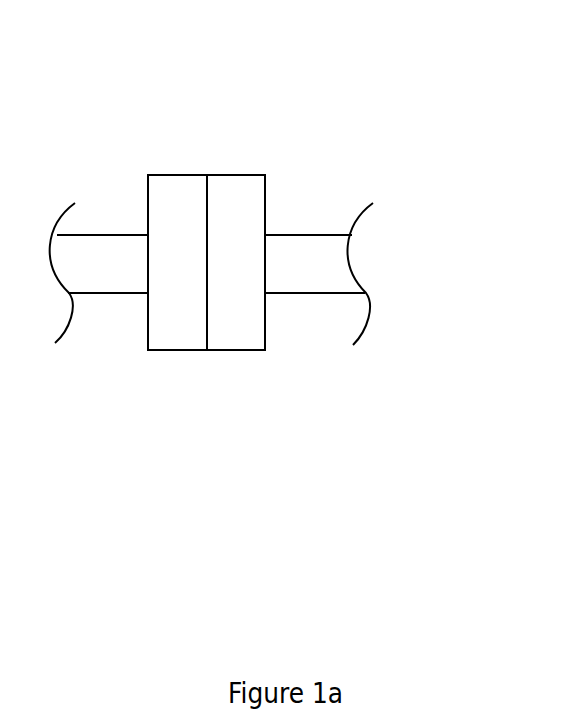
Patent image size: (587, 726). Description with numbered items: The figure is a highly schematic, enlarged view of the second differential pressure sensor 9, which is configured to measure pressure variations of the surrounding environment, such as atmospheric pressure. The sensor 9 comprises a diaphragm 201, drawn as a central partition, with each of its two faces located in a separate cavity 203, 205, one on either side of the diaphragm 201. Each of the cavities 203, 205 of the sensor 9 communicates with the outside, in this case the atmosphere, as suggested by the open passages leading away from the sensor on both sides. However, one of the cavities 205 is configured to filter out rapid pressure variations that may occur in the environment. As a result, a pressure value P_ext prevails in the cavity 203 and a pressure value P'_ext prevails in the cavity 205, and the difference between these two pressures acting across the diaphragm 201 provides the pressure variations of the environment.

The second differential pressure sensor 9 is at (258, 246).
The diaphragm 201 is at (207, 208).
The cavity 203 is at (247, 332).
The cavity 205 is at (168, 198).